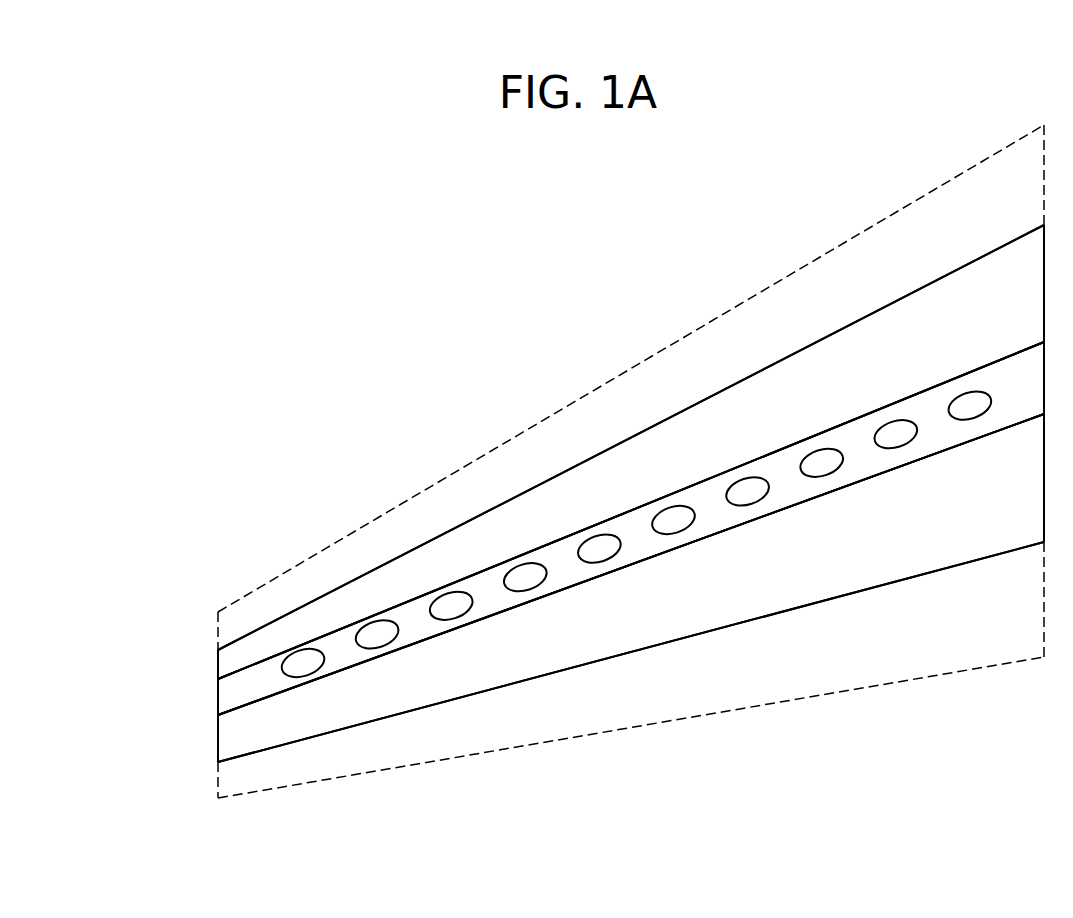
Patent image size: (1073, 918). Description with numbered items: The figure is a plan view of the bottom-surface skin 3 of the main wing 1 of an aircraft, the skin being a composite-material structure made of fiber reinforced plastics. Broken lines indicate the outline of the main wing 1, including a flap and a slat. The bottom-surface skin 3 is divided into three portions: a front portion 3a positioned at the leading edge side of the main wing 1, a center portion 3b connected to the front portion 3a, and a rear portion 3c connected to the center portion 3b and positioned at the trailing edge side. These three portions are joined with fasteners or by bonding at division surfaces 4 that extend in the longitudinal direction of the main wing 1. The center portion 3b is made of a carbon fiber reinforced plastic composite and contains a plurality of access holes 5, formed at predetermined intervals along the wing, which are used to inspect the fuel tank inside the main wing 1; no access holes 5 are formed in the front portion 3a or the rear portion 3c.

The main wing 1 is at (594, 253).
The bottom-surface skin 3 is at (962, 270).
The front portion 3a is at (846, 345).
The center portion 3b is at (795, 485).
The rear portion 3c is at (750, 611).
The division surfaces 4 is at (770, 448).
The access holes 5 is at (683, 522).